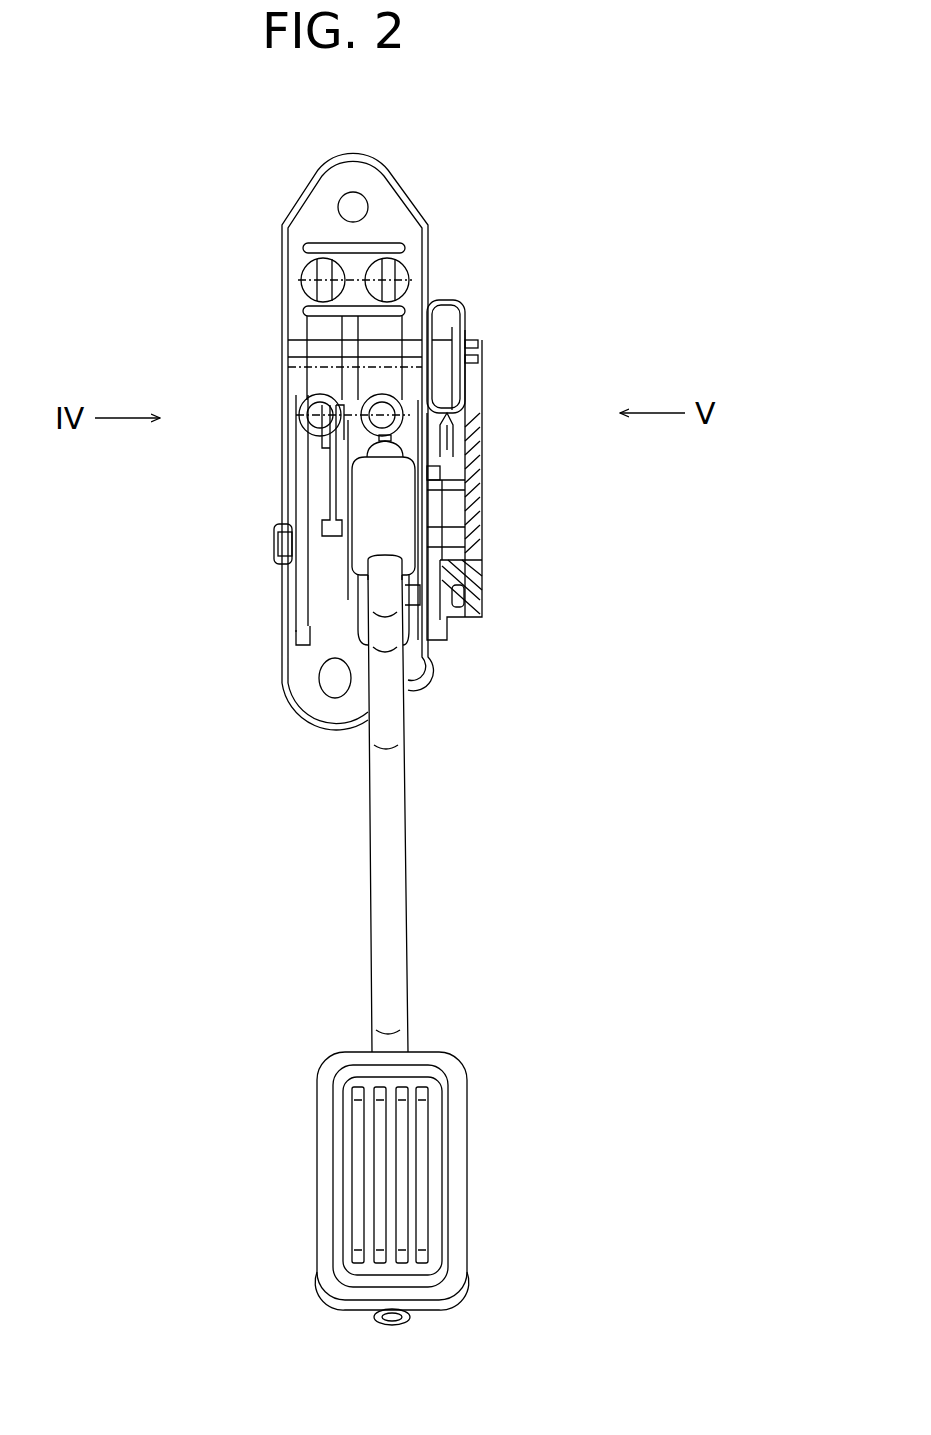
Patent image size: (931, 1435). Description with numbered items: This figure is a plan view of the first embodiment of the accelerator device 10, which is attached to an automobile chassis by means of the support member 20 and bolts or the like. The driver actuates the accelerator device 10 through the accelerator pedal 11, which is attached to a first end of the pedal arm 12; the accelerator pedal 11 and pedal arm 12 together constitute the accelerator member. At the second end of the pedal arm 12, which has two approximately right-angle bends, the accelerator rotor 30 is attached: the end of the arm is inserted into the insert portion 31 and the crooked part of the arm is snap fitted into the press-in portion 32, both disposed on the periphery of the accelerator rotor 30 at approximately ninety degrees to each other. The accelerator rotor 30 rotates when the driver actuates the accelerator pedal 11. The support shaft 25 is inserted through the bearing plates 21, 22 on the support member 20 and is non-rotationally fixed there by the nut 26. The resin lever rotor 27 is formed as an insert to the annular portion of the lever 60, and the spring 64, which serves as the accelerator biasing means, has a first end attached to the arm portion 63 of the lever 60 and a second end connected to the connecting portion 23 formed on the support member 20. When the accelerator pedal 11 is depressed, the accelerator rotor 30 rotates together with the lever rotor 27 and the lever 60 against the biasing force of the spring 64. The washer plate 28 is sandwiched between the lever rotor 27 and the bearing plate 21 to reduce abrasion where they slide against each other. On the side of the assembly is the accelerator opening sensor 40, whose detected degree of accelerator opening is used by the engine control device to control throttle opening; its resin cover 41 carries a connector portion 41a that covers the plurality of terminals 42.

The accelerator device 10 is at (434, 203).
The accelerator pedal 11 is at (466, 1147).
The pedal arm 12 is at (408, 888).
The support member 20 is at (390, 173).
The bearing plate 21 is at (290, 612).
The bearing plate 22 is at (438, 488).
The connecting portion 23 is at (315, 274).
The support shaft 25 is at (274, 545).
The nut 26 is at (286, 524).
The lever rotor 27 is at (320, 583).
The washer plate 28 is at (300, 634).
The accelerator rotor 30 is at (422, 545).
The insert portion 31 is at (400, 523).
The press-in portion 32 is at (410, 648).
The accelerator opening sensor 40 is at (486, 450).
The cover 41 is at (482, 415).
The connector portion 41a is at (468, 312).
The terminals 42 is at (453, 330).
The lever 60 is at (326, 466).
The arm portion 63 is at (318, 425).
The spring 64 is at (408, 297).